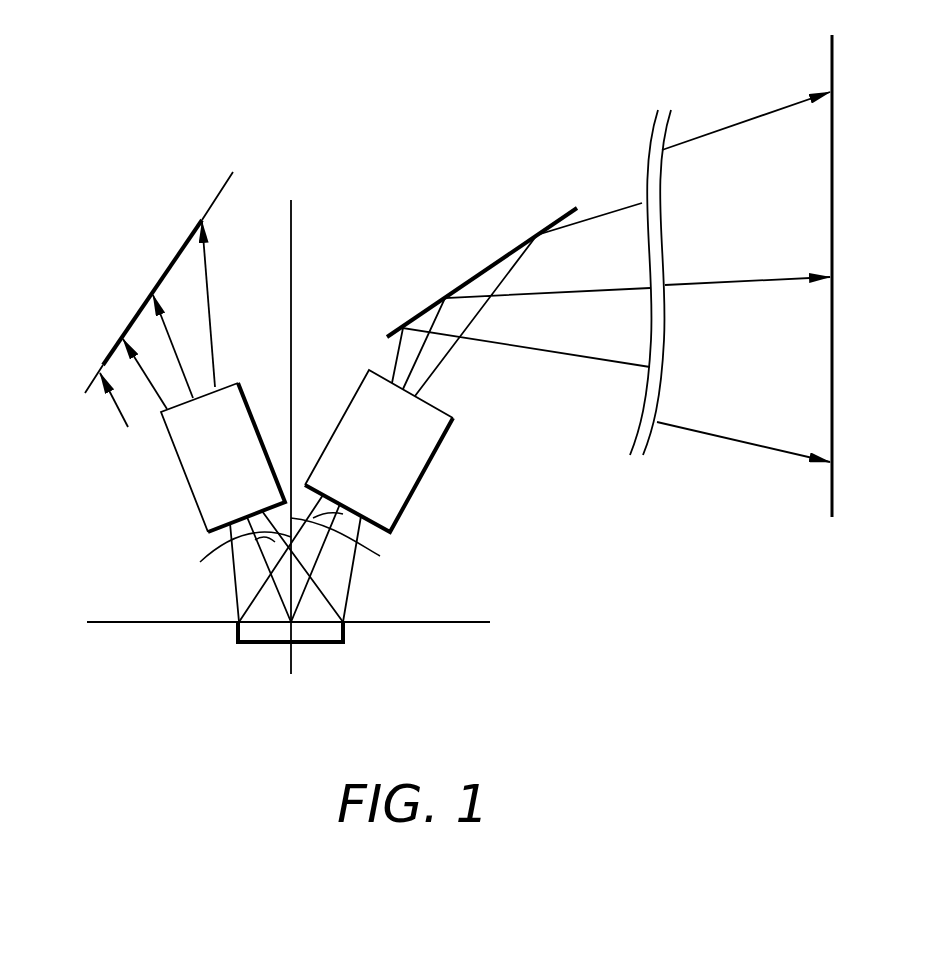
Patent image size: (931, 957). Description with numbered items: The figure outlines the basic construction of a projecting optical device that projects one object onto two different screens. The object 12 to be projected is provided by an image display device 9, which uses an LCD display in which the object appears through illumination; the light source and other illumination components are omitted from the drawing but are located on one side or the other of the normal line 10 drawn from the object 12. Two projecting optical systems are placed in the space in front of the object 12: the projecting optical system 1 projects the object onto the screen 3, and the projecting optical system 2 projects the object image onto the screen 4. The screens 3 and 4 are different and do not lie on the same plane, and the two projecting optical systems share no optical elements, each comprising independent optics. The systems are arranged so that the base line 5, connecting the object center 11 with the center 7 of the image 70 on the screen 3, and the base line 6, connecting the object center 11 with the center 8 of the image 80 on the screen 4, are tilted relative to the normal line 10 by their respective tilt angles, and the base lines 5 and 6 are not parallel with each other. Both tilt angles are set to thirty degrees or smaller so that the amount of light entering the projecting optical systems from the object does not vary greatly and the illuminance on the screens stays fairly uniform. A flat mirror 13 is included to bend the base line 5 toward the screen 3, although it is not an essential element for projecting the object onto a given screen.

The projecting optical system 1 is at (412, 472).
The projecting optical system 2 is at (205, 467).
The screen 3 is at (830, 499).
The screen 4 is at (133, 399).
The base line 5 is at (547, 398).
The base line 6 is at (177, 352).
The center of image 7 is at (823, 283).
The image 70 is at (830, 405).
The center of image 8 is at (158, 288).
The image 80 is at (133, 326).
The image display device 9 is at (349, 646).
The normal line 10 is at (293, 342).
The object center 11 is at (290, 668).
The object 12 is at (320, 621).
The flat mirror 13 is at (485, 268).